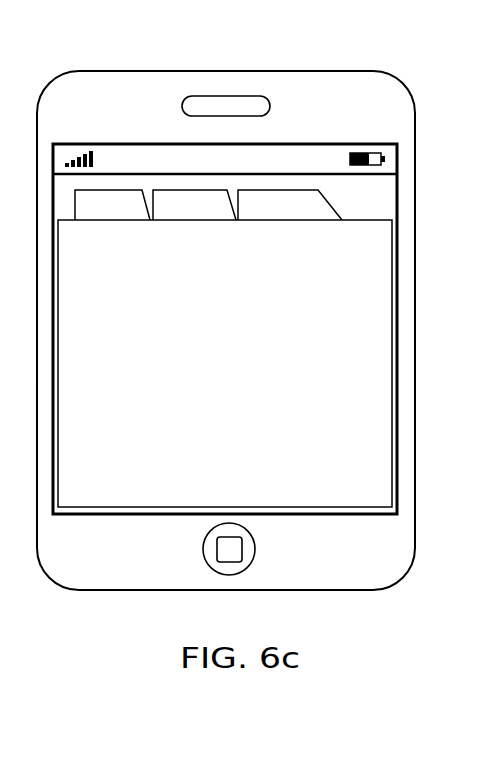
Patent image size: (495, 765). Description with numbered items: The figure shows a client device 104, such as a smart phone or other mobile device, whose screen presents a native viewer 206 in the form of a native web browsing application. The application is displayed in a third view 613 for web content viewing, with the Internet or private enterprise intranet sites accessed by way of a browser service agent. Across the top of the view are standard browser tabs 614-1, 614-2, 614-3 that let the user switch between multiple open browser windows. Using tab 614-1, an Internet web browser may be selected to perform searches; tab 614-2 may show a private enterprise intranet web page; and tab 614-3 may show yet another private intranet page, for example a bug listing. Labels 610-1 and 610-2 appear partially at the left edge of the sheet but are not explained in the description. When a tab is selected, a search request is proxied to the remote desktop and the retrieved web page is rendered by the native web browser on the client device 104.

The client device 104 is at (345, 68).
The native viewer 206 is at (372, 502).
The third view 613 is at (277, 233).
The tab 614-1 is at (112, 221).
The tab 614-2 is at (195, 221).
The tab 614-3 is at (285, 222).
The item 610-1 is at (29, 330).
The item 610-2 is at (29, 370).